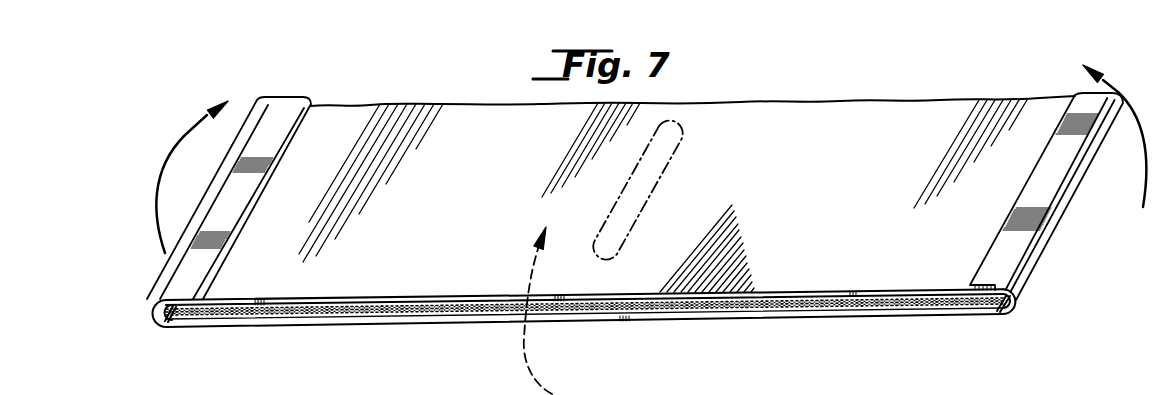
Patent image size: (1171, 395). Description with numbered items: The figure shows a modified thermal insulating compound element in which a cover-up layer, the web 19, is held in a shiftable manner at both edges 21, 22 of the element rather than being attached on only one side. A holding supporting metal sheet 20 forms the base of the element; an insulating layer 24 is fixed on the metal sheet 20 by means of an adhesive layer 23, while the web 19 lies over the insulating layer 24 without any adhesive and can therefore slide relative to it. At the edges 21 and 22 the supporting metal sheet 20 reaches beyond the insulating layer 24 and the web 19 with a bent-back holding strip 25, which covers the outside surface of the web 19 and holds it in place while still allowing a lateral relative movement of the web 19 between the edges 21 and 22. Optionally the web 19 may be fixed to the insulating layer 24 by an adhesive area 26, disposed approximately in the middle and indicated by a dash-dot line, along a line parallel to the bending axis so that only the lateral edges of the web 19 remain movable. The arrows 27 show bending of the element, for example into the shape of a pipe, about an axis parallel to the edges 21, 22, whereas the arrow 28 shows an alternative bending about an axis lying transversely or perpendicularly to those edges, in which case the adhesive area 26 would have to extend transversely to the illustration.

The web 19 is at (836, 132).
The supporting metal sheet 20 is at (837, 317).
The edge 21 is at (1023, 271).
The edge 22 is at (144, 310).
The adhesive layer 23 is at (770, 314).
The insulating layer 24 is at (705, 310).
The holding strip 25 is at (268, 145).
The adhesive area 26 is at (657, 187).
The arrows 27 is at (162, 162).
The arrow 28 is at (522, 346).